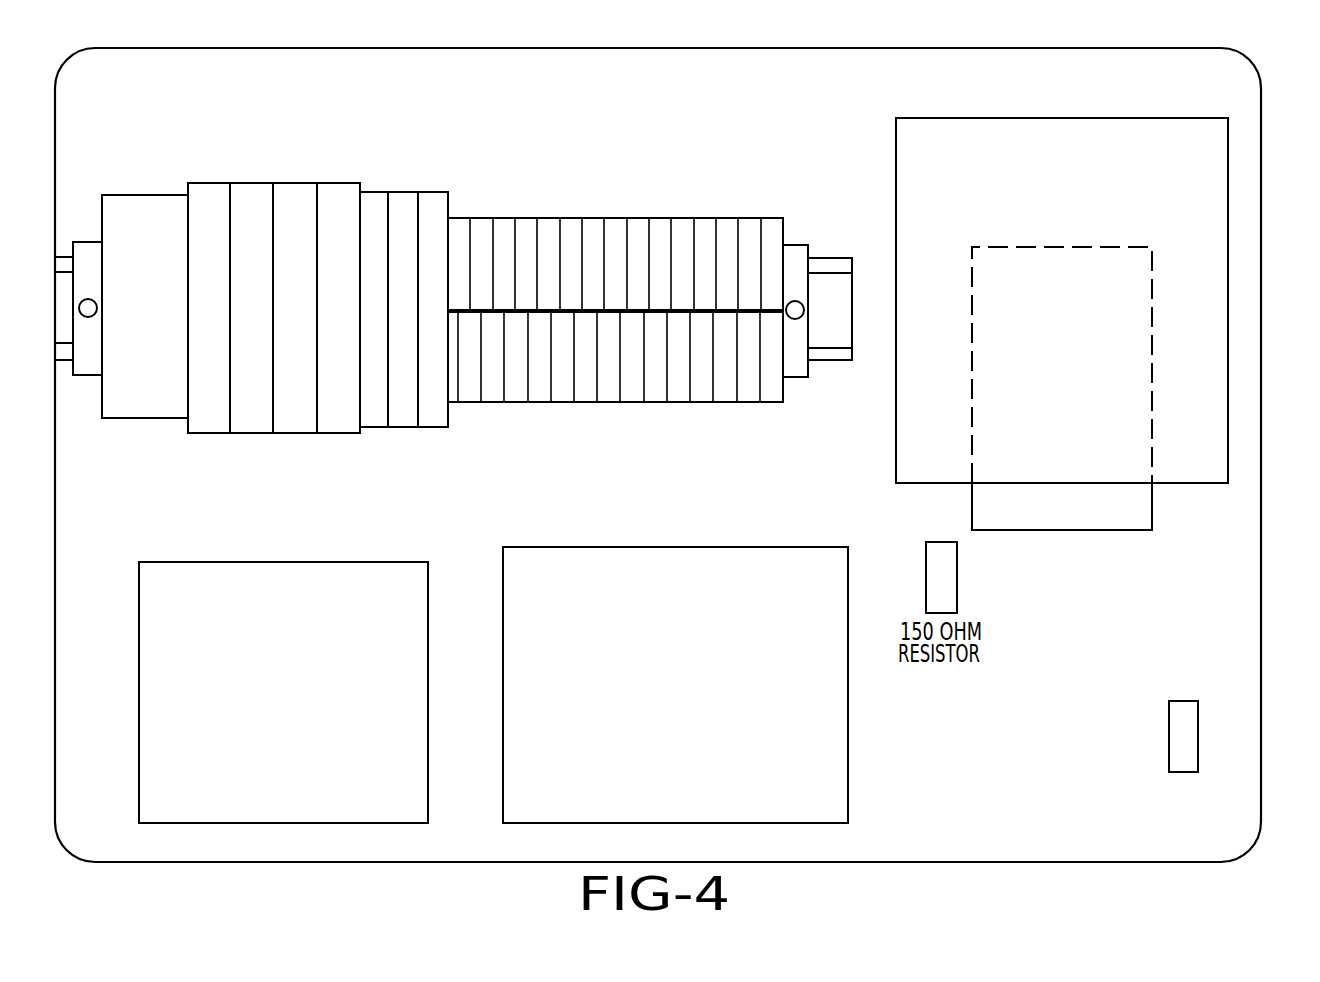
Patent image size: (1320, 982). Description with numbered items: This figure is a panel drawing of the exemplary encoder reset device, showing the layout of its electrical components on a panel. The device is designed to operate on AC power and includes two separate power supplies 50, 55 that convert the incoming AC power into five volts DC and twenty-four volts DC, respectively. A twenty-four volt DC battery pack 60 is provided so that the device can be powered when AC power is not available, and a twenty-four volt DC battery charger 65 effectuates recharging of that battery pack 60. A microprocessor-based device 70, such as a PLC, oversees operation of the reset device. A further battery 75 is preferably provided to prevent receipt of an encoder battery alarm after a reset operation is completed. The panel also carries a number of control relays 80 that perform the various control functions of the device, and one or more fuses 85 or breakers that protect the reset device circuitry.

The power supply 50 is at (200, 798).
The power supply 55 is at (367, 798).
The battery pack 60 is at (803, 798).
The battery charger 65 is at (1122, 512).
The microprocessor-based device 70 is at (1183, 255).
The battery 75 is at (1179, 737).
The control relays 80 is at (353, 172).
The fuses 85 is at (460, 195).